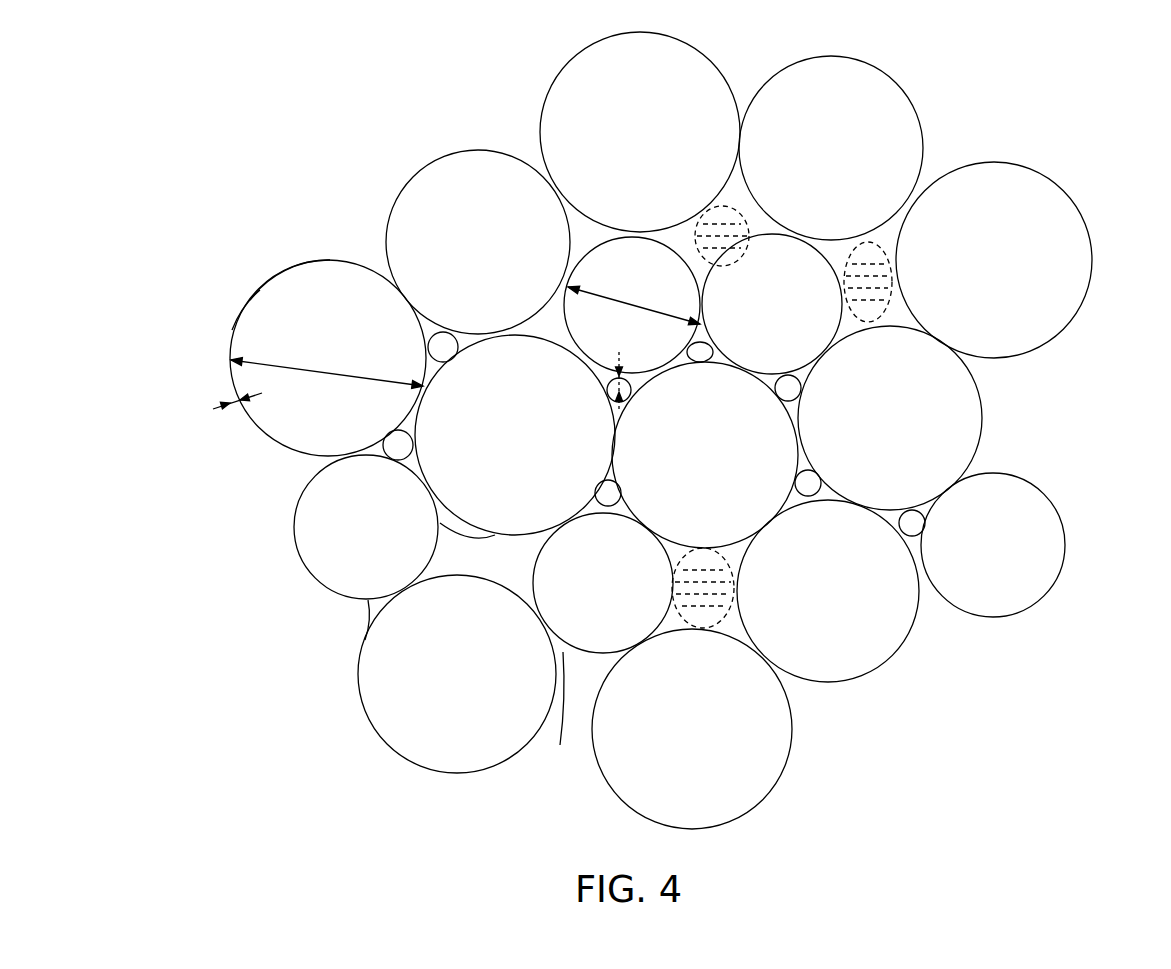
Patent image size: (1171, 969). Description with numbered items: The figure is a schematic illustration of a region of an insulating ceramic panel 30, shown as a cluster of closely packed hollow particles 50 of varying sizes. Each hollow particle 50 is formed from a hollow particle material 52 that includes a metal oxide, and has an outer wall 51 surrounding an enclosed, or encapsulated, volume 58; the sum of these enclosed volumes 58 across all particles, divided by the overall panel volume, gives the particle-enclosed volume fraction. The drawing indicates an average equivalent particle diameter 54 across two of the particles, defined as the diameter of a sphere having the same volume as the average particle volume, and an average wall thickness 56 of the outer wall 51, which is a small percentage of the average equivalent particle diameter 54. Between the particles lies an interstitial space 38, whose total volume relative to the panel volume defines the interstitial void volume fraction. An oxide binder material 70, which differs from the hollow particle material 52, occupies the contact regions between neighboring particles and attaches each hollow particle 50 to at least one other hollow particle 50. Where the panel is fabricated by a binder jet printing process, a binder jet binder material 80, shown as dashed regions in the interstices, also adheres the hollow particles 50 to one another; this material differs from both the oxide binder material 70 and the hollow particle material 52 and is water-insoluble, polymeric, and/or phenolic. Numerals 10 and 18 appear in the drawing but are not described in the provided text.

The energy storage device 10 is at (140, 125).
The electrode 18 is at (148, 193).
The insulating ceramic panel 30 is at (143, 253).
The interstitial space 38 is at (465, 550).
The hollow particle 50 is at (538, 118).
The outer wall 51 is at (240, 310).
The hollow particle material 52 is at (272, 272).
The average equivalent particle diameter 54 is at (328, 364).
The average wall thickness 56 is at (217, 403).
The enclosed volume 58 is at (330, 512).
The oxide binder material 70 is at (366, 601).
The binder jet binder material 80 is at (708, 212).